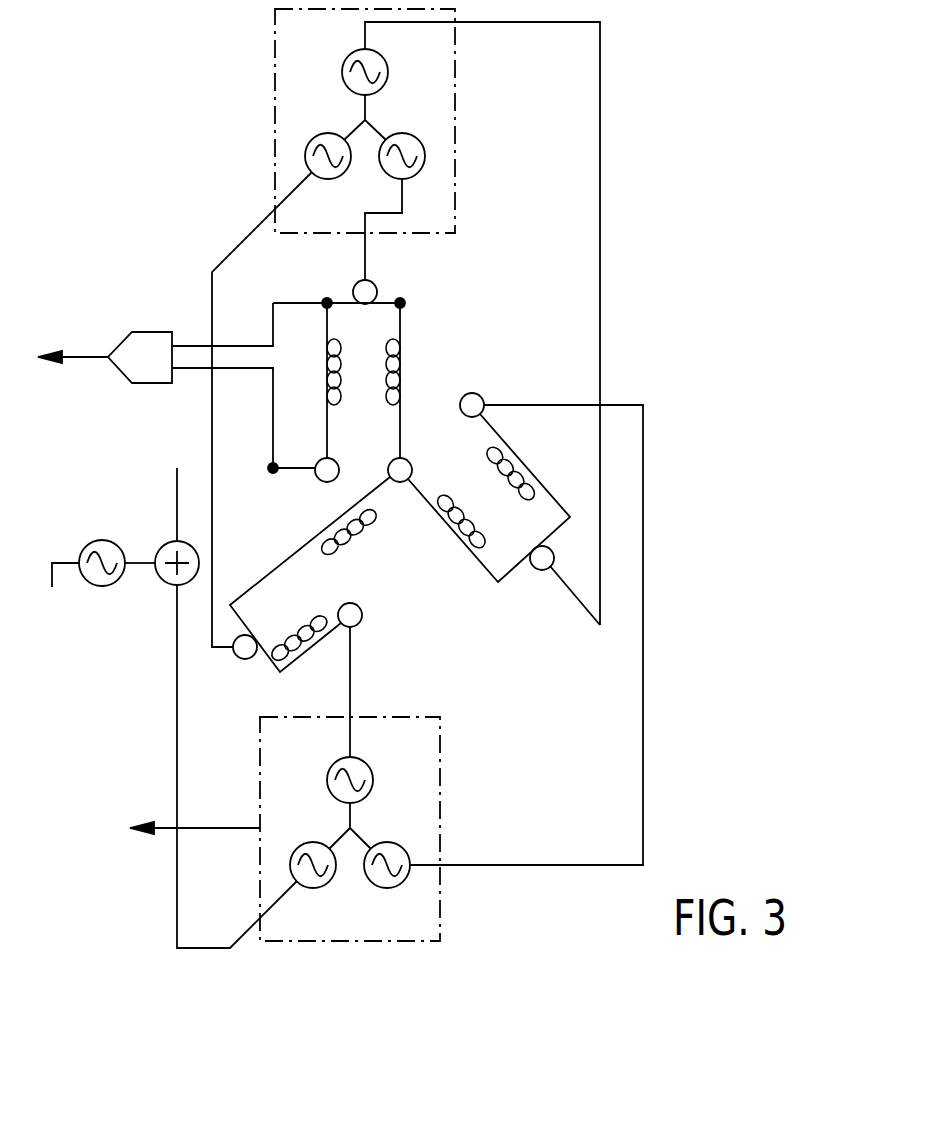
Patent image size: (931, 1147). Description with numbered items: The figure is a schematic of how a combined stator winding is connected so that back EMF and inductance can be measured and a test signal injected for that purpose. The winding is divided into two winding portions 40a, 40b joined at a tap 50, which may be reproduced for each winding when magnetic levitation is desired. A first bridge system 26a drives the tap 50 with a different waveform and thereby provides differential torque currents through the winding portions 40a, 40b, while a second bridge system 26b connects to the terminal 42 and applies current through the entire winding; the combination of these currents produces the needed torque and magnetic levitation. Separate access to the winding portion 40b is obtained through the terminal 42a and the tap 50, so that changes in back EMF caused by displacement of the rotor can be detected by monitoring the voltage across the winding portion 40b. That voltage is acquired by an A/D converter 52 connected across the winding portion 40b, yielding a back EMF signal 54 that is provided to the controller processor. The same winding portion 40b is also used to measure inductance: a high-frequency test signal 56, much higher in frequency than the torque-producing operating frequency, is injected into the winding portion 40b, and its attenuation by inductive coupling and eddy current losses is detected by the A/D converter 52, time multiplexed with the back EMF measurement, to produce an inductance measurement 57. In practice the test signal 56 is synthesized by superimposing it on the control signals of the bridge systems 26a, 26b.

The first bridge system 26a is at (455, 121).
The second bridge system 26b is at (441, 830).
The winding portion 40a is at (378, 375).
The winding portion 40b is at (342, 383).
The terminal 42 is at (410, 460).
The terminal 42a is at (318, 486).
The tap 50 is at (372, 283).
The A/D converter 52 is at (148, 343).
The back EMF signal 54 is at (80, 355).
The high-frequency test signal 56 is at (101, 585).
The inductance measurement 57 is at (110, 360).